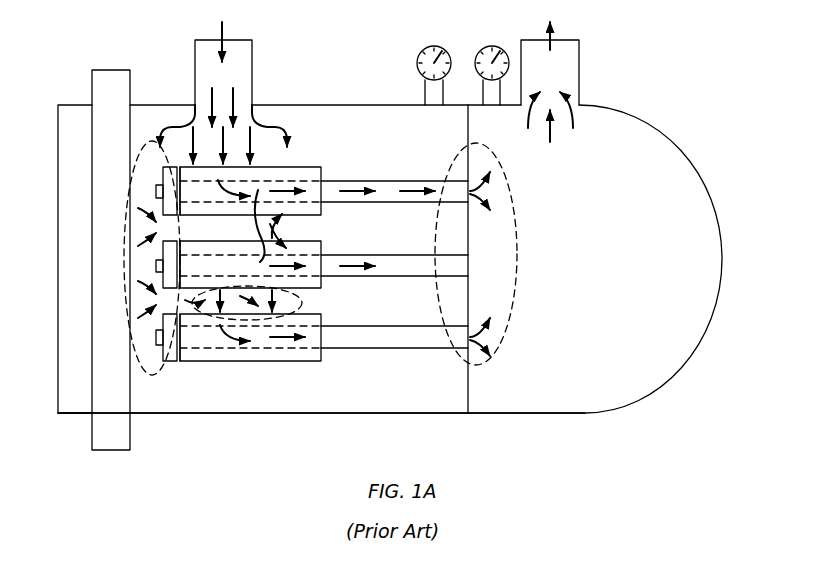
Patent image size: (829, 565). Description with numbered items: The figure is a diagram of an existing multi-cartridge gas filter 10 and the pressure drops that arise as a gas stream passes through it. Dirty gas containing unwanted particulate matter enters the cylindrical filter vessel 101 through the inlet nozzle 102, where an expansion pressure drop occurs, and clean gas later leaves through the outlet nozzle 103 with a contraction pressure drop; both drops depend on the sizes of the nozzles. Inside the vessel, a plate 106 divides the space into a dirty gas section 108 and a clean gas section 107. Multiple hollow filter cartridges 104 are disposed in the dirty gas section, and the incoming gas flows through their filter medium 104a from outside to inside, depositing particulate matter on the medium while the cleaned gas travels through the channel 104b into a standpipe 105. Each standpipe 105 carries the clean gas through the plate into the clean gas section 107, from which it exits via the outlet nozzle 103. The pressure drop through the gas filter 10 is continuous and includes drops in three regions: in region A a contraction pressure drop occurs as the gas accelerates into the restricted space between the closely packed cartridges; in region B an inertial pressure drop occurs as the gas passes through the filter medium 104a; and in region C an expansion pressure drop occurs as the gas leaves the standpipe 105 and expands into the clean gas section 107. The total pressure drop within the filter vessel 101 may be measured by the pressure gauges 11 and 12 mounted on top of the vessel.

The multi-cartridge gas filter 10 is at (668, 45).
The pressure gauge 11 is at (417, 66).
The pressure gauge 12 is at (476, 55).
The cylindrical filter vessel 101 is at (352, 414).
The inlet nozzle 102 is at (252, 41).
The outlet nozzle 103 is at (579, 74).
The hollow filter cartridge 104 is at (319, 214).
The filter medium 104a is at (254, 352).
The channel 104b is at (257, 190).
The standpipe 105 is at (412, 181).
The plate 106 is at (468, 388).
The clean gas section 107 is at (650, 148).
The dirty gas section 108 is at (278, 390).
The region A is at (158, 374).
The region B is at (300, 288).
The region C is at (490, 366).